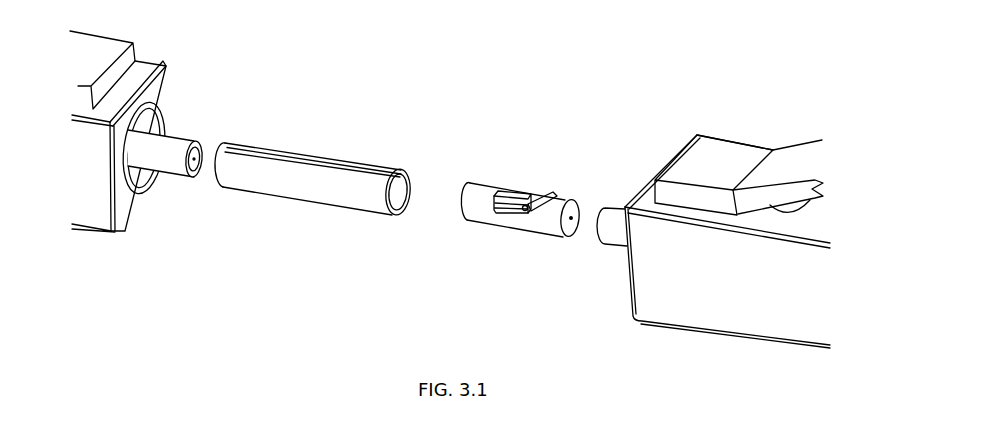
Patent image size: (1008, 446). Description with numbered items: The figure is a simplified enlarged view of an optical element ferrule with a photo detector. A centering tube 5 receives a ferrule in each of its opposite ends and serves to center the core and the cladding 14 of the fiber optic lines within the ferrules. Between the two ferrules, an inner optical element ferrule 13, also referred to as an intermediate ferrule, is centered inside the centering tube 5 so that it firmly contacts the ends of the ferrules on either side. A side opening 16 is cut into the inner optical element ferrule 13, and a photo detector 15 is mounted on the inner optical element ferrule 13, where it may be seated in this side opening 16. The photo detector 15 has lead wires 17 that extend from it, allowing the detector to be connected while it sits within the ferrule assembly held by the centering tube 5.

The centering tube 5 is at (315, 182).
The inner optical element ferrule 13 is at (553, 213).
The cladding 14 is at (572, 217).
The photo detector 15 is at (503, 192).
The side opening 16 is at (530, 212).
The lead wires 17 is at (558, 191).